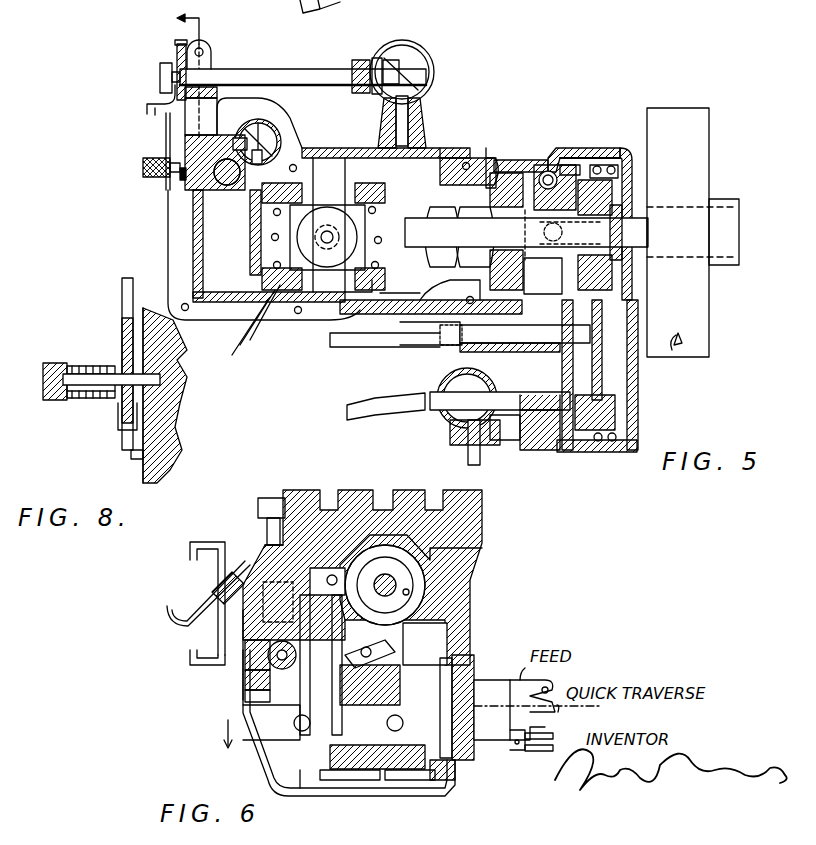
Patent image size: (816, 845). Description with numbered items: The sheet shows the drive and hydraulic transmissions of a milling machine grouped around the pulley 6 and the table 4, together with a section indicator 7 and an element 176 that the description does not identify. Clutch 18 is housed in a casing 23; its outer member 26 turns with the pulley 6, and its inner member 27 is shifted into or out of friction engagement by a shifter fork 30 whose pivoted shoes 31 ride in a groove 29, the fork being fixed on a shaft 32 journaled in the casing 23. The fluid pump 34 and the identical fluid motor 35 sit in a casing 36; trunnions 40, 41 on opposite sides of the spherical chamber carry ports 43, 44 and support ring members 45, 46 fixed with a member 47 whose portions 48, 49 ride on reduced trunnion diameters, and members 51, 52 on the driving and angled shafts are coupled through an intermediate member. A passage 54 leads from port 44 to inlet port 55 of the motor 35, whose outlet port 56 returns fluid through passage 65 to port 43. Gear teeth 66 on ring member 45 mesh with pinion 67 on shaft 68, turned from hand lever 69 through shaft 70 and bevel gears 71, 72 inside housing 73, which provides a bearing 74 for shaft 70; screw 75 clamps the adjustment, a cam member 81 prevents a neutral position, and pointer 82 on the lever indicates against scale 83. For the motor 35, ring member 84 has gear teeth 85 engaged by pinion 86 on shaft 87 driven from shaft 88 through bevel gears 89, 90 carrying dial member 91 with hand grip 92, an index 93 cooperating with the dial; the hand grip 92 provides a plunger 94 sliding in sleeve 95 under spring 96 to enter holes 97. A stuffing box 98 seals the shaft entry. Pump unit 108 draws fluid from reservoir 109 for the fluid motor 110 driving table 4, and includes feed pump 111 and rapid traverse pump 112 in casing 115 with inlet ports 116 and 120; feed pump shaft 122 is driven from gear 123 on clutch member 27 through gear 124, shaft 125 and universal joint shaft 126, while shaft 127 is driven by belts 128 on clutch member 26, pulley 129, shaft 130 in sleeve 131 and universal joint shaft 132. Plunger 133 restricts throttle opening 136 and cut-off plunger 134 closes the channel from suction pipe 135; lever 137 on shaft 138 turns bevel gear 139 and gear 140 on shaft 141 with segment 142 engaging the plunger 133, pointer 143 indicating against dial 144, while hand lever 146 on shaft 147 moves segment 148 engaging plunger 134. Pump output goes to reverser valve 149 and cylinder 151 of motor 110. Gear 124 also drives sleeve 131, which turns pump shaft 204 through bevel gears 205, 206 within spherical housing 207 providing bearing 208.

In FIG. 6, the table 4 is at (486, 517).
In FIG. 5, the pulley 6 is at (684, 108).
In FIG. 5, the section line 7 is at (177, 73).
In FIG. 5, the clutch 18 is at (598, 140).
In FIG. 5, the casing 23 is at (624, 148).
In FIG. 5, the outer member of clutch 26 is at (580, 197).
In FIG. 5, the inner member of clutch 27 is at (580, 273).
In FIG. 5, the groove 29 is at (555, 184).
In FIG. 5, the shifter fork 30 is at (552, 150).
In FIG. 5, the pivoted shoes 31 is at (560, 233).
In FIG. 5, the shaft 32 is at (572, 150).
In FIG. 5, the fluid pump 34 is at (486, 135).
In FIG. 5, the fluid motor 35 is at (322, 160).
In FIG. 5, the casing 36 is at (352, 150).
In FIG. 5, the trunnion 40 is at (486, 160).
In FIG. 5, the trunnion 41 is at (490, 310).
In FIG. 5, the port 43 is at (475, 158).
In FIG. 5, the port 44 is at (462, 295).
In FIG. 5, the ring member 45 is at (520, 160).
In FIG. 5, the ring member 46 is at (524, 294).
In FIG. 5, the member 47 is at (326, 257).
In FIG. 5, the portion of member 47 48 is at (455, 168).
In FIG. 5, the portion of member 47 49 is at (425, 298).
In FIG. 5, the member 51 is at (475, 237).
In FIG. 5, the member 52 is at (442, 237).
In FIG. 5, the passage 54 is at (330, 316).
In FIG. 5, the port 55 is at (348, 292).
In FIG. 5, the outlet port 56 is at (325, 158).
In FIG. 5, the passage 65 is at (432, 148).
In FIG. 5, the gear teeth 66 is at (327, 225).
In FIG. 5, the pinion 67 is at (388, 172).
In FIG. 5, the shaft 68 is at (430, 120).
In FIG. 5, the hand lever 69 is at (150, 106).
In FIG. 5, the shaft 70 is at (302, 66).
In FIG. 5, the bevel gear 71 is at (378, 52).
In FIG. 5, the bevel gear 72 is at (424, 90).
In FIG. 5, the housing 73 is at (428, 64).
In FIG. 5, the bearing 74 is at (356, 64).
In FIG. 5, the screw 75 is at (207, 51).
In FIG. 5, the cam member 81 is at (218, 93).
In FIG. 5, the pointer 82 is at (177, 49).
In FIG. 5, the scale 83 is at (176, 44).
In FIG. 5, the ring member 84 is at (252, 322).
In FIG. 5, the gear teeth 85 is at (245, 330).
In FIG. 5, the pinion 86 is at (236, 350).
In FIG. 6, the pinion 86 is at (325, 665).
In FIG. 5, the shaft 87 is at (250, 222).
In FIG. 5, the shaft 88 is at (215, 144).
In FIG. 5, the bevel gear 89 is at (283, 103).
In FIG. 5, the bevel gear 90 is at (280, 133).
In FIG. 5, the dial member 91 is at (167, 132).
In FIG. 8, the dial member 91 is at (122, 296).
In FIG. 5, the hand grip 92 is at (143, 170).
In FIG. 8, the hand grip 92 is at (43, 366).
In FIG. 5, the pointer or index 93 is at (183, 180).
In FIG. 8, the pointer or index 93 is at (135, 455).
In FIG. 8, the plunger 94 is at (150, 347).
In FIG. 8, the sleeve 95 is at (115, 408).
In FIG. 8, the spring 96 is at (85, 368).
In FIG. 8, the holes 97 is at (158, 395).
In FIG. 5, the stuffing box 98 is at (543, 276).
In FIG. 6, the fluid pump unit 108 is at (445, 660).
In FIG. 6, the fluid reservoir 109 is at (455, 770).
In FIG. 6, the fluid motor 110 is at (427, 588).
In FIG. 6, the feed pump 111 is at (308, 798).
In FIG. 6, the rapid traverse pump 112 is at (395, 796).
In FIG. 6, the casing 115 is at (340, 796).
In FIG. 6, the inlet port 116 is at (270, 745).
In FIG. 6, the inlet port 120 is at (448, 790).
In FIG. 6, the shaft 122 is at (495, 680).
In FIG. 5, the gear 123 is at (590, 158).
In FIG. 5, the gear 124 is at (568, 312).
In FIG. 5, the shaft 125 is at (514, 352).
In FIG. 5, the extensible universal joint shaft 126 is at (345, 346).
In FIG. 6, the shaft 127 is at (510, 752).
In FIG. 5, the endless belts 128 is at (625, 360).
In FIG. 5, the pulley 129 is at (620, 410).
In FIG. 5, the shaft 130 is at (540, 410).
In FIG. 5, the sleeve 131 is at (540, 436).
In FIG. 5, the extensible universal joint shaft 132 is at (385, 395).
In FIG. 6, the plunger 133 is at (250, 710).
In FIG. 6, the plunger 134 is at (370, 685).
In FIG. 6, the suction pipe 135 is at (359, 742).
In FIG. 6, the throttle opening 136 is at (240, 722).
In FIG. 6, the lever 137 is at (168, 604).
In FIG. 6, the shaft 138 is at (212, 590).
In FIG. 6, the bevel gear 139 is at (282, 645).
In FIG. 6, the gear 140 is at (250, 660).
In FIG. 6, the shaft 141 is at (250, 678).
In FIG. 6, the segment 142 is at (250, 694).
In FIG. 6, the pointer 143 is at (262, 560).
In FIG. 6, the dial or index member 144 is at (268, 553).
In FIG. 6, the hand lever 146 is at (190, 660).
In FIG. 6, the shaft 147 is at (230, 620).
In FIG. 6, the segment 148 is at (378, 590).
In FIG. 6, the reverser valve 149 is at (378, 640).
In FIG. 6, the cylinder 151 is at (410, 592).
In FIG. 6, the bracket 176 is at (192, 548).
In FIG. 5, the pump shaft 204 is at (466, 450).
In FIG. 5, the bevel gear 205 is at (470, 372).
In FIG. 5, the bevel gear 206 is at (450, 430).
In FIG. 5, the spherical housing 207 is at (438, 384).
In FIG. 5, the bearing 208 is at (500, 440).